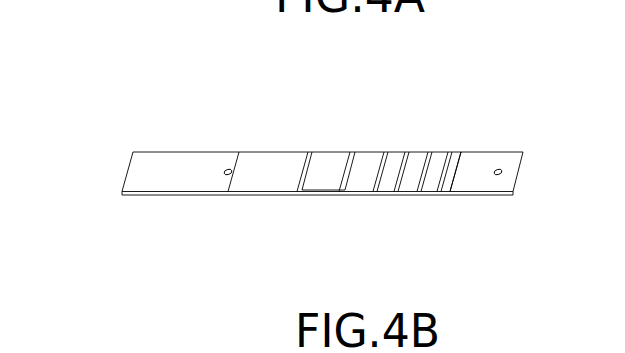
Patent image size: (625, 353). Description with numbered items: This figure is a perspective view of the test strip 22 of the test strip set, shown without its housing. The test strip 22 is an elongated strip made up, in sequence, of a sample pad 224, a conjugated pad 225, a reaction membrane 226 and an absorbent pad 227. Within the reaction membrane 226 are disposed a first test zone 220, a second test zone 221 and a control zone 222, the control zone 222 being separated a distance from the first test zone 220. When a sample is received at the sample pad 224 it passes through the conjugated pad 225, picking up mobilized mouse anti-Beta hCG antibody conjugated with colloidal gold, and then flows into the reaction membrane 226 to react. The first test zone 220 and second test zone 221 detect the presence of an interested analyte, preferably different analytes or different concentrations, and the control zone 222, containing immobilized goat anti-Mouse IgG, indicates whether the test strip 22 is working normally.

The test strip 22 is at (186, 123).
The first test zone 220 is at (387, 162).
The second test zone 221 is at (403, 163).
The control zone 222 is at (438, 162).
The sample pad 224 is at (181, 177).
The conjugated pad 225 is at (302, 177).
The reaction membrane 226 is at (411, 188).
The absorbent pad 227 is at (482, 177).